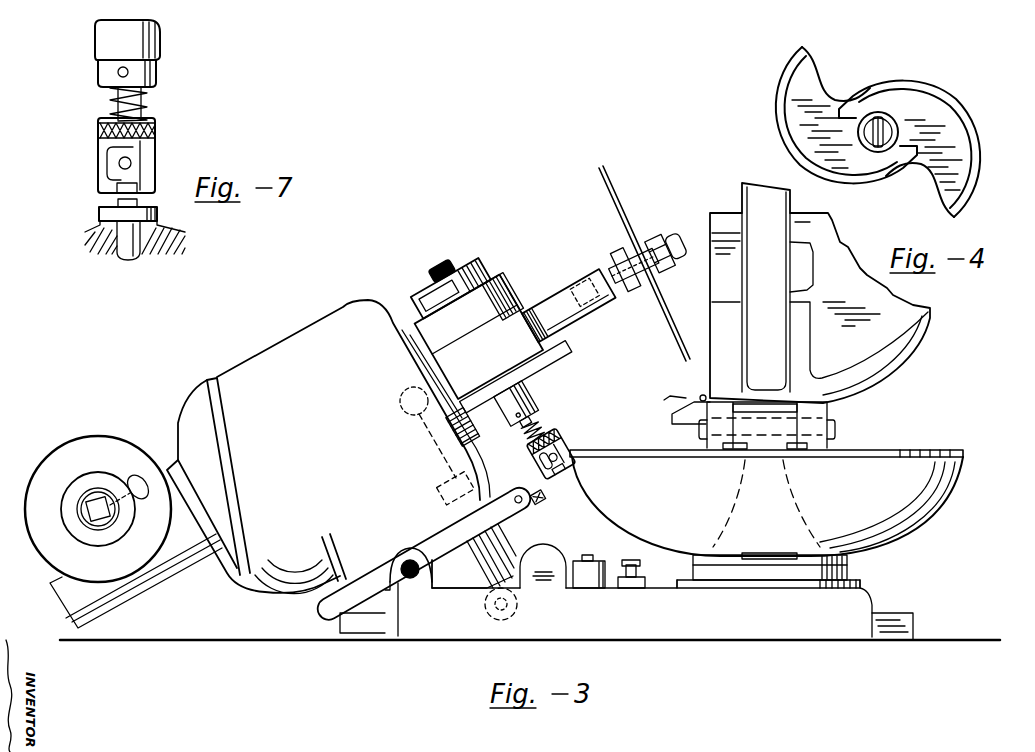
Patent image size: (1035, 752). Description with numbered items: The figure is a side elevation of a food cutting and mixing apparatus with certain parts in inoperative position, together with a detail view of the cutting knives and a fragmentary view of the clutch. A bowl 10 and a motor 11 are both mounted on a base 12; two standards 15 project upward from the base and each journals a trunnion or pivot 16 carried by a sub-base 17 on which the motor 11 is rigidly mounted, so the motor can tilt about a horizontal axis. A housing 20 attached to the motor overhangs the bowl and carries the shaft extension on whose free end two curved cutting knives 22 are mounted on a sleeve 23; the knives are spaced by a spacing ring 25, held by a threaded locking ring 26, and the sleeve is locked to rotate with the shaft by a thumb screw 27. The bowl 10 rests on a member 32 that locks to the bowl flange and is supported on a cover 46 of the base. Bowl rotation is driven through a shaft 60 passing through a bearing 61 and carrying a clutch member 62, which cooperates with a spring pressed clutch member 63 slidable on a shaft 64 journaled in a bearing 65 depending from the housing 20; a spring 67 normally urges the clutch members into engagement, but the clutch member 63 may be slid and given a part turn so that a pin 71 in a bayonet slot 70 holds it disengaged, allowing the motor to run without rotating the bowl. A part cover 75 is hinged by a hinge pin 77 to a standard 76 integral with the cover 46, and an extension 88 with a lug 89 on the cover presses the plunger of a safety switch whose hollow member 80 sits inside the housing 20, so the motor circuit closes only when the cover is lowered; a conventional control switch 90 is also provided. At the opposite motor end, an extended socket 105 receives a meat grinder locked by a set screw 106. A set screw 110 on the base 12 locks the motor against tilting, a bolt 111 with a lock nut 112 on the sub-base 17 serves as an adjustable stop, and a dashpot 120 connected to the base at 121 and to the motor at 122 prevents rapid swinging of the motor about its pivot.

In FIG. 3, the bowl 10 is at (968, 504).
In FIG. 3, the motor 11 is at (312, 333).
In FIG. 3, the base 12 is at (875, 600).
In FIG. 3, the standards 15 is at (387, 593).
In FIG. 3, the trunnion or pivot 16 is at (408, 578).
In FIG. 3, the sub-base 17 is at (322, 606).
In FIG. 3, the housing 20 is at (541, 312).
In FIG. 4, the cutting knives 22 is at (818, 97).
In FIG. 3, the cutting knives 22 is at (627, 203).
In FIG. 4, the sleeve 23 is at (888, 120).
In FIG. 3, the sleeve 23 is at (638, 290).
In FIG. 3, the spacing ring 25 is at (633, 248).
In FIG. 3, the locking ring 26 is at (657, 238).
In FIG. 3, the thumb screw 27 is at (682, 238).
In FIG. 3, the member 32 is at (877, 558).
In FIG. 3, the cover 46 is at (863, 582).
In FIG. 7, the shaft 60 is at (125, 250).
In FIG. 3, the bearing 61 is at (634, 568).
In FIG. 7, the clutch member 62 is at (105, 213).
In FIG. 3, the clutch member 62 is at (602, 561).
In FIG. 7, the spring pressed clutch member 63 is at (158, 176).
In FIG. 3, the spring pressed clutch member 63 is at (563, 451).
In FIG. 7, the shaft 64 is at (150, 100).
In FIG. 3, the shaft 64 is at (523, 432).
In FIG. 7, the bearing 65 is at (160, 40).
In FIG. 3, the bearing 65 is at (530, 386).
In FIG. 7, the spring 67 is at (108, 100).
In FIG. 3, the spring 67 is at (543, 421).
In FIG. 7, the bayonet slot 70 is at (112, 163).
In FIG. 3, the bayonet slot 70 is at (560, 431).
In FIG. 7, the pin 71 is at (140, 158).
In FIG. 3, the pin 71 is at (540, 462).
In FIG. 3, the cover 75 is at (922, 340).
In FIG. 3, the standard 76 is at (787, 500).
In FIG. 3, the hinge pin 77 is at (830, 427).
In FIG. 3, the hollow member 80 is at (582, 282).
In FIG. 3, the extension 88 is at (697, 400).
In FIG. 3, the lug 89 is at (668, 400).
In FIG. 3, the control switch 90 is at (471, 258).
In FIG. 3, the extended socket 105 is at (100, 478).
In FIG. 3, the set screw 106 is at (140, 473).
In FIG. 3, the set screw 110 is at (550, 577).
In FIG. 3, the set screw or bolt 111 is at (533, 503).
In FIG. 3, the lock nut 112 is at (530, 495).
In FIG. 3, the dashpot 120 is at (470, 557).
In FIG. 3, the dashpot base connection 121 is at (490, 614).
In FIG. 3, the dashpot motor connection 122 is at (405, 392).